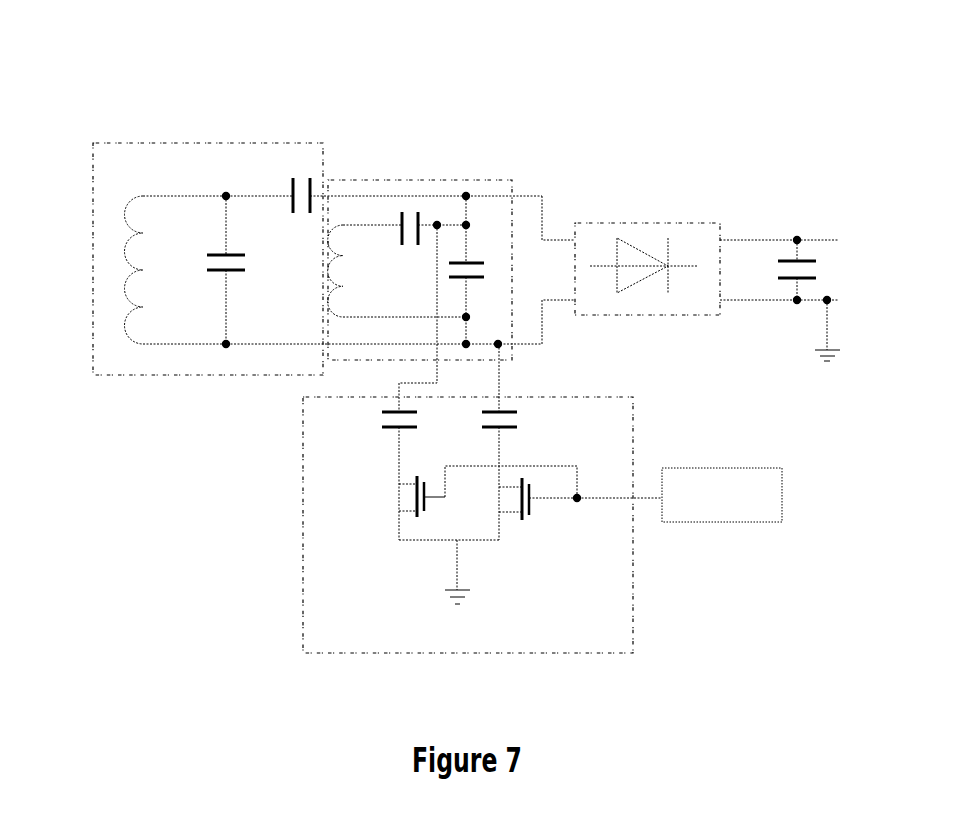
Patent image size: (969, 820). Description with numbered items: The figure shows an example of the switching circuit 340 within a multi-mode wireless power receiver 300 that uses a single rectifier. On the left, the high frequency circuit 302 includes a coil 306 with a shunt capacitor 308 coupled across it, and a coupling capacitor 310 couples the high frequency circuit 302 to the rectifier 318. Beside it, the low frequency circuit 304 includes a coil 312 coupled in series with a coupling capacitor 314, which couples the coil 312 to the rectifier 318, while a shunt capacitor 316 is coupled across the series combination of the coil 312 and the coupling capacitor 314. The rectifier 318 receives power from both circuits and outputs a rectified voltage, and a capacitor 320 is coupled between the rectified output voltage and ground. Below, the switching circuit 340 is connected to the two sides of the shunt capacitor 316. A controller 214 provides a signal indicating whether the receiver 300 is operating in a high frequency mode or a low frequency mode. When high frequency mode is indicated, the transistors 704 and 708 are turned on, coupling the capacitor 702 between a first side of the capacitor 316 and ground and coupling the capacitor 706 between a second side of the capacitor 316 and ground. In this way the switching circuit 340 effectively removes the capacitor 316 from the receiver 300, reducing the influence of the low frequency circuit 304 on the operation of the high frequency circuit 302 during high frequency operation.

The receiver 300 is at (72, 80).
The high frequency circuit 302 is at (156, 177).
The low frequency circuit 304 is at (437, 185).
The coil 306 is at (133, 272).
The shunt capacitor 308 is at (243, 266).
The coupling capacitor 310 is at (293, 183).
The coil 312 is at (343, 265).
The coupling capacitor 314 is at (400, 235).
The shunt capacitor 316 is at (477, 273).
The rectifier 318 is at (617, 232).
The capacitor 320 is at (815, 263).
The switching circuit 340 is at (613, 630).
The capacitor 702 is at (396, 431).
The transistor 704 is at (410, 500).
The capacitor 706 is at (518, 412).
The transistor 708 is at (510, 503).
The controller 214 is at (732, 512).